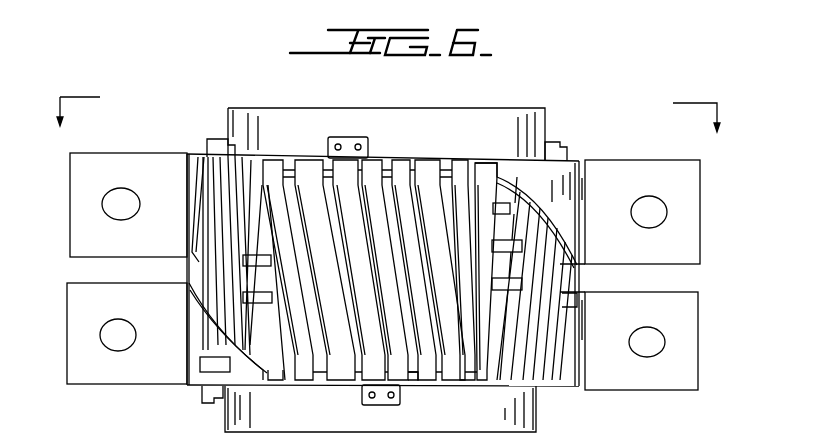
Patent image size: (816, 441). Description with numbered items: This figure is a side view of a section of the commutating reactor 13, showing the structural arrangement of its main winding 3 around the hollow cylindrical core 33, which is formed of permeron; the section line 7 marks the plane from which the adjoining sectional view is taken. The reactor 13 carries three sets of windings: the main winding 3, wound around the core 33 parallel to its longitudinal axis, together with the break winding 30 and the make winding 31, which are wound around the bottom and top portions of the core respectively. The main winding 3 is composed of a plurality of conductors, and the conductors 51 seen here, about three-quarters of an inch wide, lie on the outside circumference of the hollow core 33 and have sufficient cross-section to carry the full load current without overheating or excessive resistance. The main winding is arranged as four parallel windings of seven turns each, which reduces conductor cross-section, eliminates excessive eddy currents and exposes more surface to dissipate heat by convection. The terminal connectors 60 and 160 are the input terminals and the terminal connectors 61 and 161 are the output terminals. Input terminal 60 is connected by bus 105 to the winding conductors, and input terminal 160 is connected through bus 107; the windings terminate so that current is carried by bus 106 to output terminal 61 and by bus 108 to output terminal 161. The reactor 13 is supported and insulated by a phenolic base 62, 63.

The main winding 3 is at (443, 279).
The section line 7- 7 is at (388, 124).
The commutating reactor 13 is at (571, 108).
The break winding 30 is at (262, 297).
The make winding 31 is at (502, 247).
The hollow cylindrical core 33 is at (282, 357).
The conductor 51 is at (418, 377).
The terminal connector 60 is at (82, 327).
The terminal connector 61 is at (80, 229).
The phenolic base 62 is at (527, 417).
The phenolic base 63 is at (436, 109).
The bus 105 is at (190, 375).
The bus 106 is at (192, 163).
The bus 107 is at (570, 385).
The bus 108 is at (568, 162).
The terminal connector 160 is at (685, 318).
The terminal connector 161 is at (690, 233).